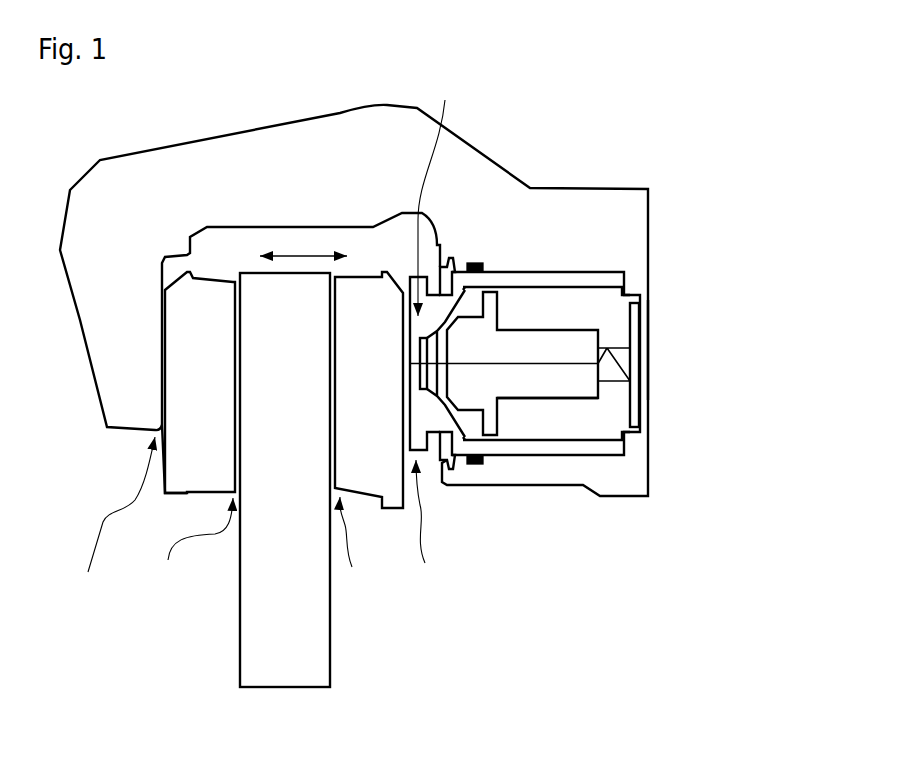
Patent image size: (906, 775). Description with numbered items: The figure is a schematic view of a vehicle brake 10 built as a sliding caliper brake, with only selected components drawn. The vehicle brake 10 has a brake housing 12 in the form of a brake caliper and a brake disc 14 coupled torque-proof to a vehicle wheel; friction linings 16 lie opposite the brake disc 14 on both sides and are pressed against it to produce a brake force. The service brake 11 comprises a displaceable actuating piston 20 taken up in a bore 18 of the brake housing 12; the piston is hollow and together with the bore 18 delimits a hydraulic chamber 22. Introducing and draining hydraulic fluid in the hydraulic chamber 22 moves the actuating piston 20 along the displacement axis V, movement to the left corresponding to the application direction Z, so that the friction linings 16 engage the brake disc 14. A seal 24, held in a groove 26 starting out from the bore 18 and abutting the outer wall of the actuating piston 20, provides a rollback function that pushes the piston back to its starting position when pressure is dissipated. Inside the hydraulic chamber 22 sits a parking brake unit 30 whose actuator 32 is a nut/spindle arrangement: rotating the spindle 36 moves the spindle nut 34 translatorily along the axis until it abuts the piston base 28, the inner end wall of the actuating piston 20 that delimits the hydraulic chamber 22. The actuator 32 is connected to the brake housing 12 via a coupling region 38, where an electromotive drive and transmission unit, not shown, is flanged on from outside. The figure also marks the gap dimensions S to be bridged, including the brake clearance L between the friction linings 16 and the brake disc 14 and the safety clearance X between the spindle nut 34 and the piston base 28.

The vehicle brake 10 is at (672, 130).
The service brake 11 is at (686, 275).
The brake housing 12 is at (600, 252).
The brake disc 14 is at (288, 493).
The friction linings 16 is at (198, 423).
The bore 18 is at (446, 280).
The actuating piston 20 is at (507, 447).
The hydraulic chamber 22 is at (552, 422).
The seal 24 is at (485, 270).
The groove 26 is at (475, 265).
The piston base 28 is at (423, 372).
The parking brake unit 30 is at (692, 318).
The actuator 32 is at (612, 395).
The spindle nut 34 is at (547, 388).
The spindle 36 is at (627, 370).
The coupling region 38 is at (633, 342).